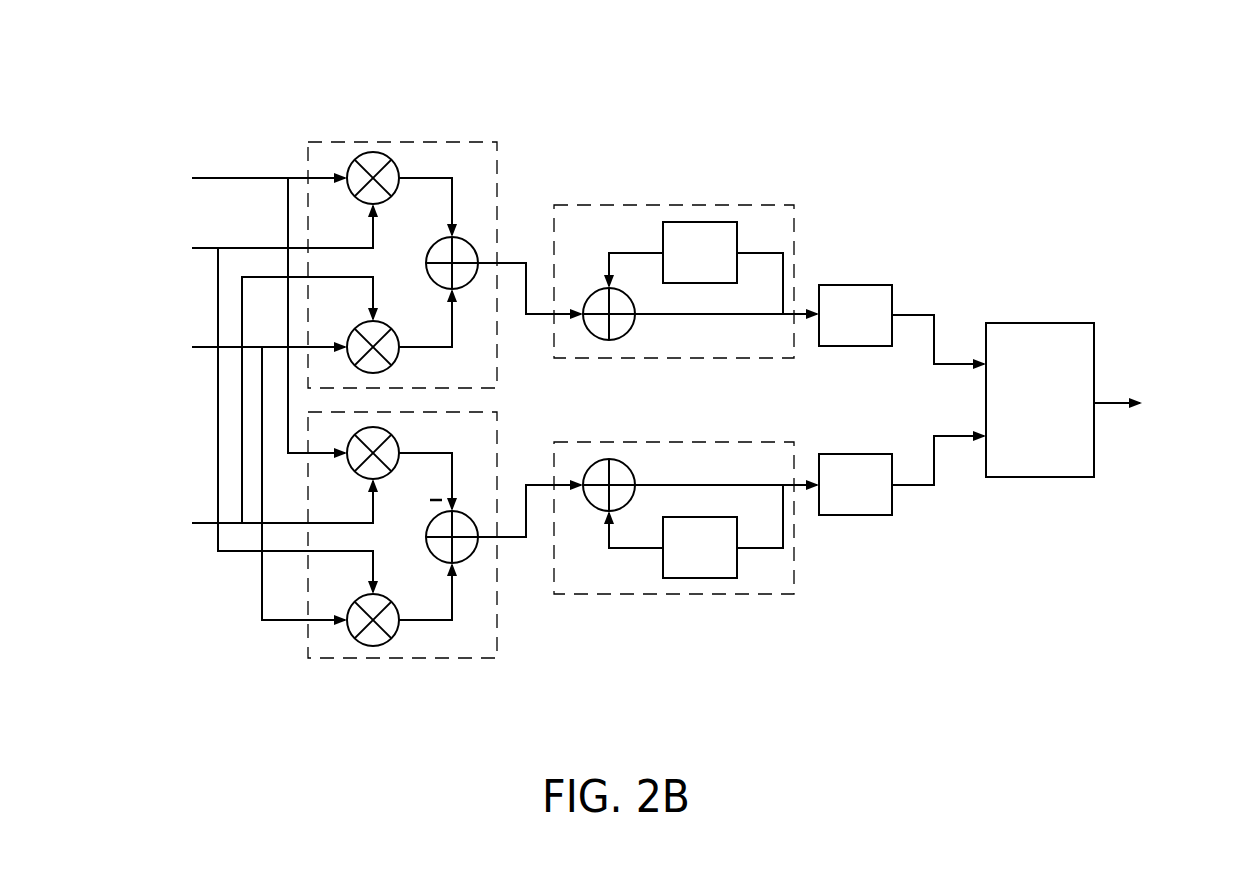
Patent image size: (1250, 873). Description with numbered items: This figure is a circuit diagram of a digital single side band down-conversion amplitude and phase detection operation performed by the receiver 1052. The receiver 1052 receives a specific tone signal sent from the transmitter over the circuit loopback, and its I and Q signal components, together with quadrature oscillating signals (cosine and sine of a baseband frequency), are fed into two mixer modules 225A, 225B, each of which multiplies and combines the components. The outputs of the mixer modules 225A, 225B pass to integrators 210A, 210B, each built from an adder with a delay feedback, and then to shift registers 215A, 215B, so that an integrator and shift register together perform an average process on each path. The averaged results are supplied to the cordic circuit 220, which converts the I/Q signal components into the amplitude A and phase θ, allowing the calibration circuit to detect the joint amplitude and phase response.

The receiver 1052 is at (1000, 115).
The mixer module 225A is at (416, 140).
The mixer module 225B is at (416, 660).
The integrator 210A is at (655, 203).
The integrator 210B is at (655, 597).
The shift register 215A is at (857, 283).
The shift register 215B is at (855, 518).
The cordic circuit 220 is at (1038, 322).